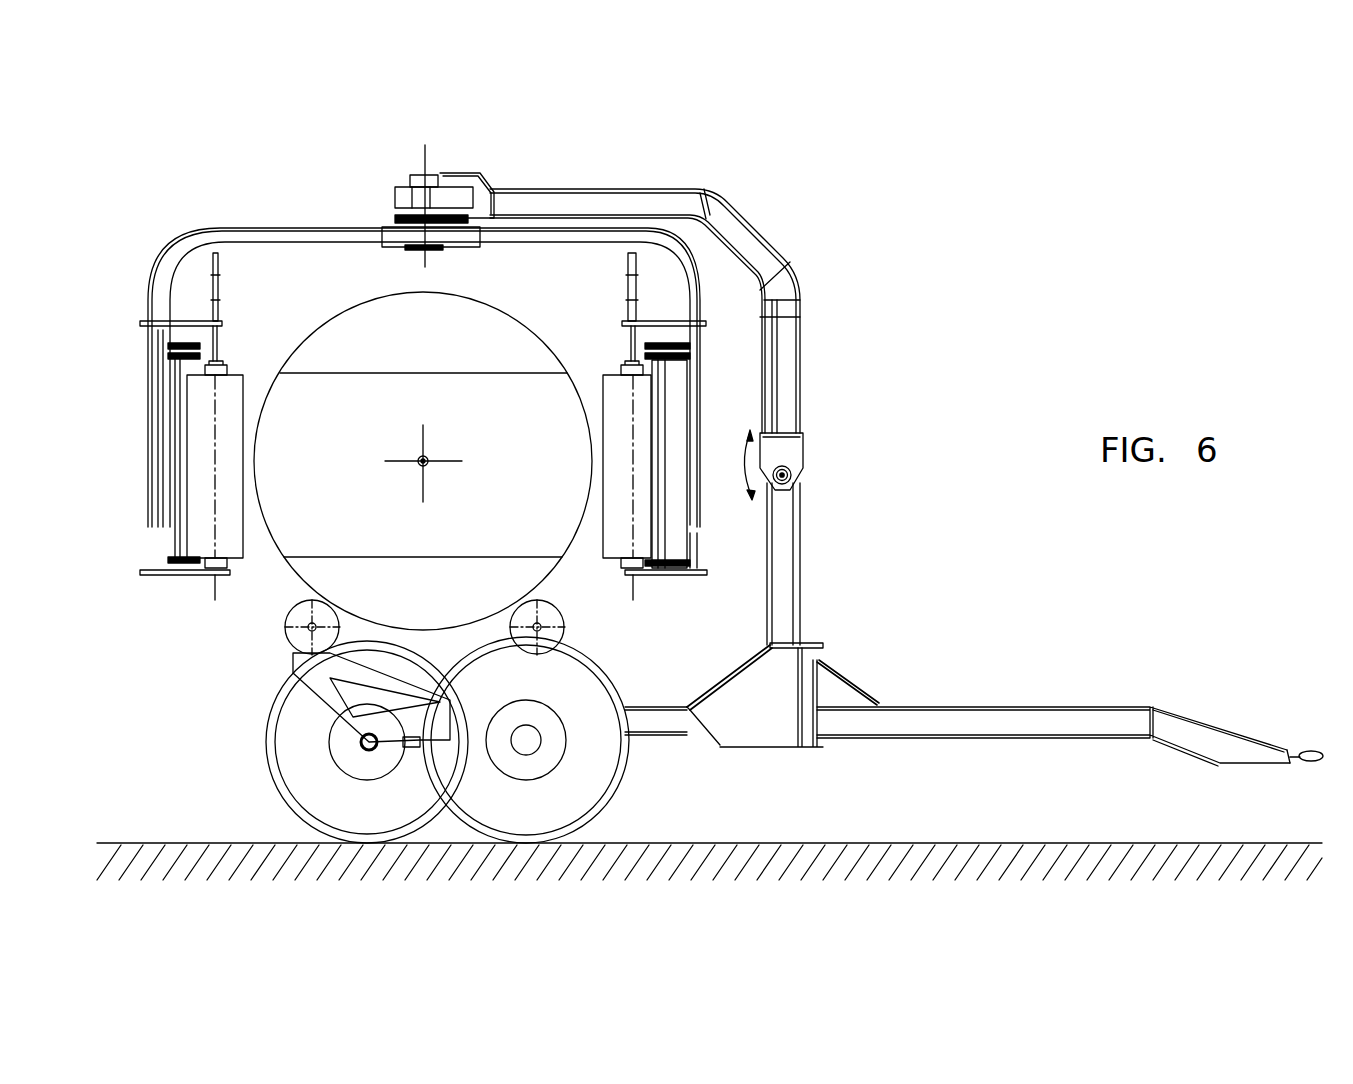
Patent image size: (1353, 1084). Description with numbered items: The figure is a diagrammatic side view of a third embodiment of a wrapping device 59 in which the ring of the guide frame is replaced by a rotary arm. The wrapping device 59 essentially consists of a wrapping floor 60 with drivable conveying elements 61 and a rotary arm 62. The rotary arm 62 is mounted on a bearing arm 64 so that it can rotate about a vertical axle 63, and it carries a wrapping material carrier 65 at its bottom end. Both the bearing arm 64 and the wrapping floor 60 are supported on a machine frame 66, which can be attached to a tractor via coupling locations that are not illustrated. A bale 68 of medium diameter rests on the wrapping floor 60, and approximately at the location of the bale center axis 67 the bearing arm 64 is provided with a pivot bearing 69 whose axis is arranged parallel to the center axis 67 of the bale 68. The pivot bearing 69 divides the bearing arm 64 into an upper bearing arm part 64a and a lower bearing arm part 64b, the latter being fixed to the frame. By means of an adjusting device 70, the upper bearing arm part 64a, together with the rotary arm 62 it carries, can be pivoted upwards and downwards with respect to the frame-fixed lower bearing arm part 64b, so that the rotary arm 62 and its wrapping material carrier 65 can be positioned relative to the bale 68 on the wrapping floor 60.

The wrapping device 59 is at (862, 367).
The wrapping floor 60 is at (282, 771).
The drivable conveying elements 61 is at (295, 635).
The rotary arm 62 is at (248, 237).
The vertical axle 63 is at (423, 160).
The bearing arm 64 is at (660, 182).
The upper bearing arm part 64a is at (765, 260).
The lower bearing arm part 64b is at (786, 510).
The wrapping material carrier 65 is at (224, 536).
The machine frame 66 is at (805, 642).
The bale center axis 67 is at (442, 440).
The bale 68 is at (320, 328).
The pivot bearing 69 is at (792, 478).
The adjusting device 70 is at (655, 514).